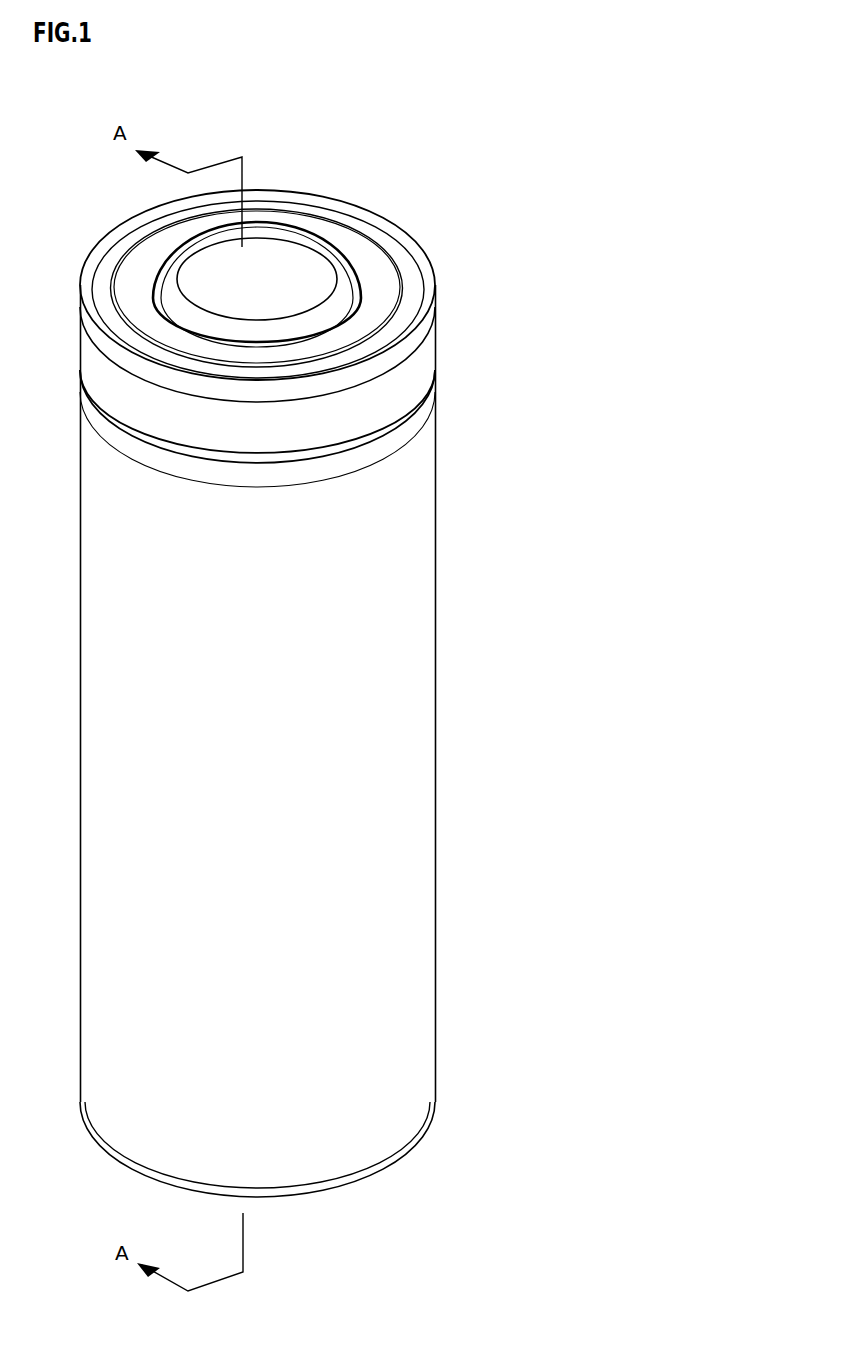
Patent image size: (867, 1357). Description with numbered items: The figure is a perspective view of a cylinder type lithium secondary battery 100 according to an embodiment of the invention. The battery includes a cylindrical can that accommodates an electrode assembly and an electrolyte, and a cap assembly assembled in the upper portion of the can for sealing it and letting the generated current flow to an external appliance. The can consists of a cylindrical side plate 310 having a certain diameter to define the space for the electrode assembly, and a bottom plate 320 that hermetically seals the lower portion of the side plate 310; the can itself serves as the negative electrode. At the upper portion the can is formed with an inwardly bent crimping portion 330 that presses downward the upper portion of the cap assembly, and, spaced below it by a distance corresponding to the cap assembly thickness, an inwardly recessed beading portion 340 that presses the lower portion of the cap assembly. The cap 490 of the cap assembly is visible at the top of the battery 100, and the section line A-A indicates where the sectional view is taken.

The cylinder type lithium secondary battery 100 is at (354, 688).
The cylindrical side plate 310 is at (393, 835).
The bottom plate 320 is at (380, 1165).
The crimping portion 330 is at (412, 273).
The beading portion 340 is at (393, 436).
The cap 490 is at (280, 255).